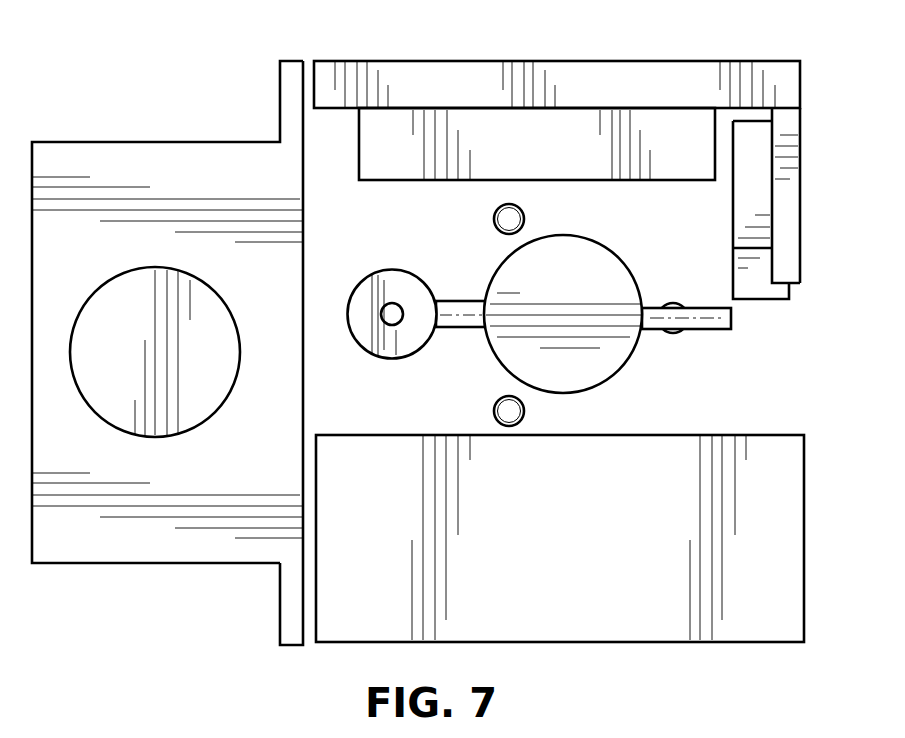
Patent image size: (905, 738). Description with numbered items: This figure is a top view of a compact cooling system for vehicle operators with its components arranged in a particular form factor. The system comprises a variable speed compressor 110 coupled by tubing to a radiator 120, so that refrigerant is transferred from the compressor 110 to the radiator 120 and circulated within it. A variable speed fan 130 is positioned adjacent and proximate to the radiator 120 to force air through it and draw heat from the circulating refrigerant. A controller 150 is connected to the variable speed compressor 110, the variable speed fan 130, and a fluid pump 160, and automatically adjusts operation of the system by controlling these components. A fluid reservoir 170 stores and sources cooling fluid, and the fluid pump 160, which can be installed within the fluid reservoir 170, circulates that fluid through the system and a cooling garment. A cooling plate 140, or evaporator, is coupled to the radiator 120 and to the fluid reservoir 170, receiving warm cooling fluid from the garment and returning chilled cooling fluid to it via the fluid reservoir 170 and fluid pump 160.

The variable speed compressor 110 is at (557, 287).
The radiator 120 is at (647, 72).
The variable speed fan 130 is at (548, 137).
The cooling plate 140 is at (555, 643).
The controller 150 is at (793, 272).
The fluid pump 160 is at (278, 565).
The fluid reservoir 170 is at (148, 140).